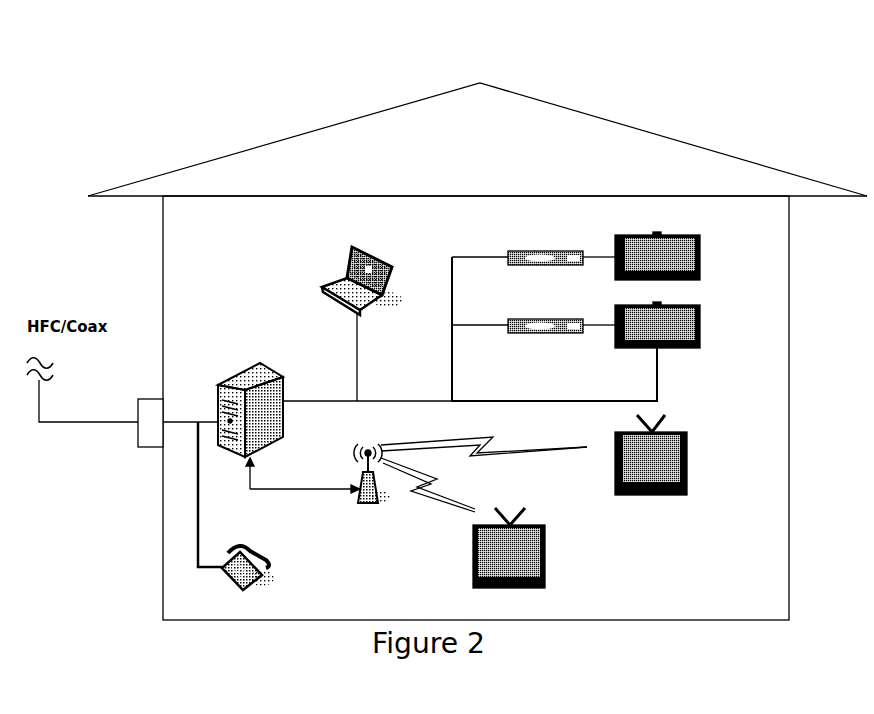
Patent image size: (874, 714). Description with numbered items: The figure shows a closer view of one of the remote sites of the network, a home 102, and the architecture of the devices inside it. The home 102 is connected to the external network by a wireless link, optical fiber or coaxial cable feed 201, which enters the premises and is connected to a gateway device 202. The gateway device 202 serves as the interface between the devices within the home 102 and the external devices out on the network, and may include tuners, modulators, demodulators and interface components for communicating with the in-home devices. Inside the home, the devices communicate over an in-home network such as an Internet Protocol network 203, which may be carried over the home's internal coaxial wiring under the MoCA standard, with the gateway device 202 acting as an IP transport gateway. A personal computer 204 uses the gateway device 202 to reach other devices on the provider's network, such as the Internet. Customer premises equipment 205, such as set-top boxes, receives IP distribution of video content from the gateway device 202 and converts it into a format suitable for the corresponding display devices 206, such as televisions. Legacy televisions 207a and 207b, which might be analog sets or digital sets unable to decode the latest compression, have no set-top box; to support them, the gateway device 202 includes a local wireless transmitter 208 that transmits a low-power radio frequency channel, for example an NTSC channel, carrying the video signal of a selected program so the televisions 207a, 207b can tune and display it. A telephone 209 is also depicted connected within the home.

The home 102 is at (477, 335).
The coaxial cable feed 201 is at (141, 430).
The gateway device 202 is at (235, 421).
The Internet Protocol network 203 is at (468, 329).
The personal computer 204 is at (338, 279).
The customer premises equipment 205 is at (547, 263).
The display device 206 is at (631, 290).
The television 207a is at (620, 455).
The television 207b is at (544, 546).
The local wireless transmitter 208 is at (418, 479).
The telephone 209 is at (275, 568).